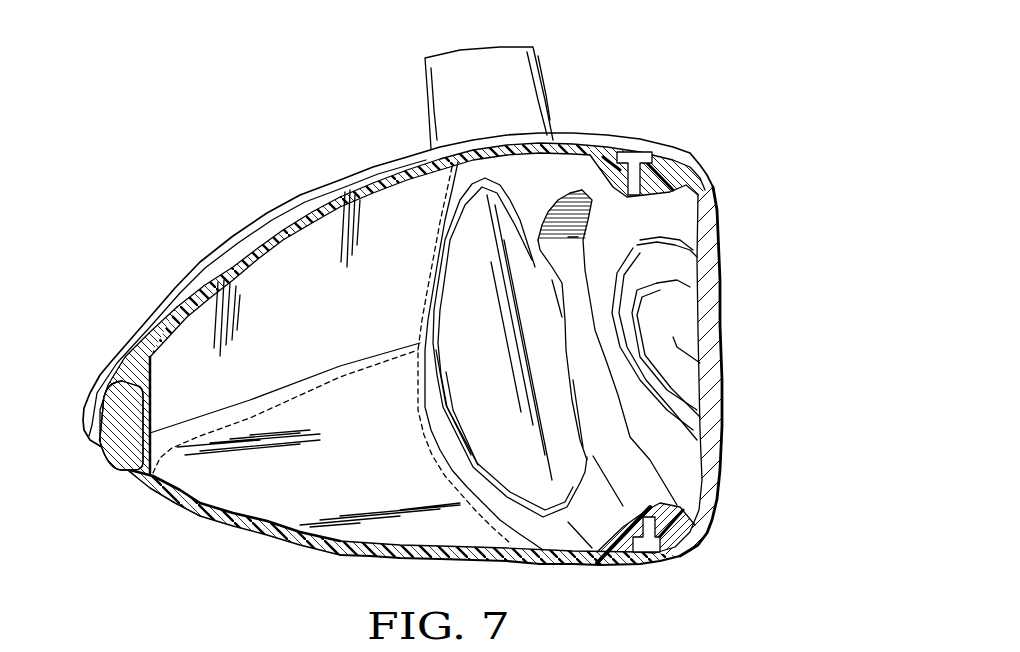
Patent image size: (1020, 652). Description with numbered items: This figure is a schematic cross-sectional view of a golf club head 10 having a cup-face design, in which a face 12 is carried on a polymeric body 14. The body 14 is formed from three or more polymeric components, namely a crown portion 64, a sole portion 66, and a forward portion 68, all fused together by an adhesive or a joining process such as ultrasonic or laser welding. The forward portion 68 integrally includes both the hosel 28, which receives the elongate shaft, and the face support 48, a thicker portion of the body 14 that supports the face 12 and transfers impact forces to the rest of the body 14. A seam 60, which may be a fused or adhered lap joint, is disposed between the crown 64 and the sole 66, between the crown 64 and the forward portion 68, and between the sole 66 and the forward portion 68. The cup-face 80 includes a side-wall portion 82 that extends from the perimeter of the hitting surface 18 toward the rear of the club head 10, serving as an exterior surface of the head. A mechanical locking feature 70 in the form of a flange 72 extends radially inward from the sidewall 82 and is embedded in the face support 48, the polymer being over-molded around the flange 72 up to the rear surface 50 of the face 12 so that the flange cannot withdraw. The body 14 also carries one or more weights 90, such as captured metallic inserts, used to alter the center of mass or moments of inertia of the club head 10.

The golf club head 10 is at (168, 158).
The face portion 12 is at (720, 283).
The body portion 14 is at (247, 230).
The hitting surface 18 is at (723, 325).
The hosel 28 is at (540, 80).
The face support 48 is at (680, 178).
The rear surface of the face 50 is at (676, 347).
The seam 60 is at (443, 195).
The crown portion 64 is at (360, 173).
The sole portion 66 is at (265, 537).
The forward portion 68 is at (567, 135).
The mechanical locking feature 70 is at (618, 172).
The flange 72 is at (607, 187).
The cup-face 80 is at (723, 446).
The side-wall portion 82 is at (627, 135).
The weight 90 is at (123, 426).